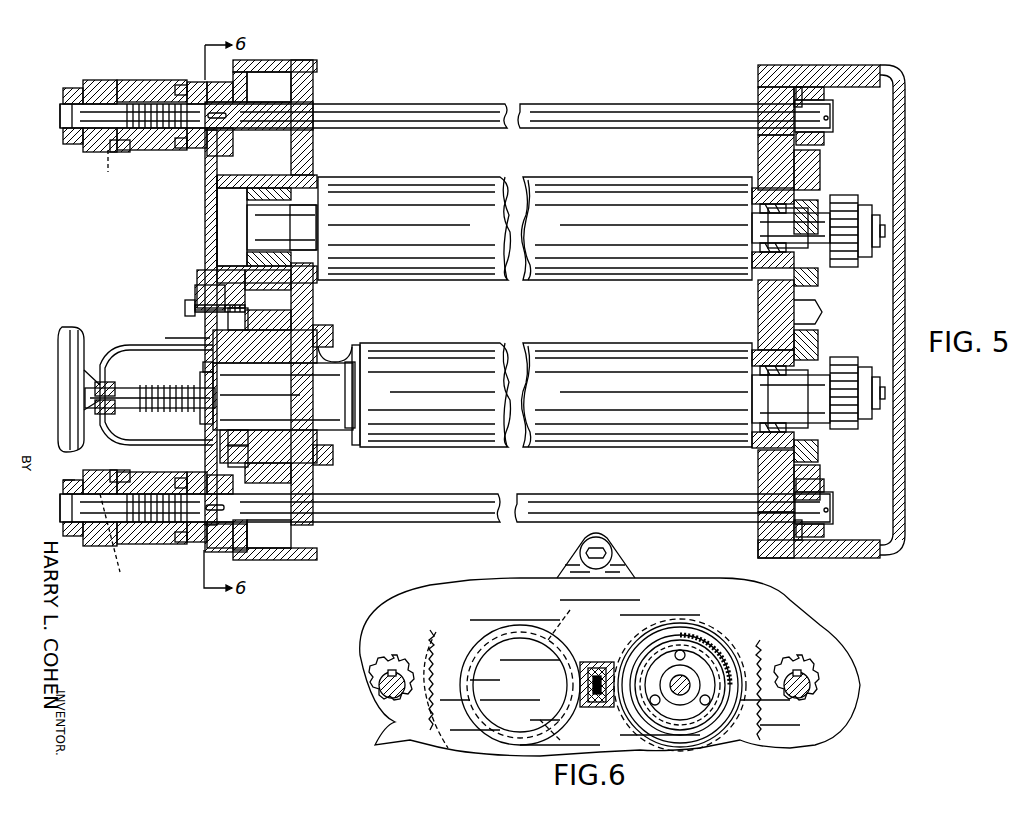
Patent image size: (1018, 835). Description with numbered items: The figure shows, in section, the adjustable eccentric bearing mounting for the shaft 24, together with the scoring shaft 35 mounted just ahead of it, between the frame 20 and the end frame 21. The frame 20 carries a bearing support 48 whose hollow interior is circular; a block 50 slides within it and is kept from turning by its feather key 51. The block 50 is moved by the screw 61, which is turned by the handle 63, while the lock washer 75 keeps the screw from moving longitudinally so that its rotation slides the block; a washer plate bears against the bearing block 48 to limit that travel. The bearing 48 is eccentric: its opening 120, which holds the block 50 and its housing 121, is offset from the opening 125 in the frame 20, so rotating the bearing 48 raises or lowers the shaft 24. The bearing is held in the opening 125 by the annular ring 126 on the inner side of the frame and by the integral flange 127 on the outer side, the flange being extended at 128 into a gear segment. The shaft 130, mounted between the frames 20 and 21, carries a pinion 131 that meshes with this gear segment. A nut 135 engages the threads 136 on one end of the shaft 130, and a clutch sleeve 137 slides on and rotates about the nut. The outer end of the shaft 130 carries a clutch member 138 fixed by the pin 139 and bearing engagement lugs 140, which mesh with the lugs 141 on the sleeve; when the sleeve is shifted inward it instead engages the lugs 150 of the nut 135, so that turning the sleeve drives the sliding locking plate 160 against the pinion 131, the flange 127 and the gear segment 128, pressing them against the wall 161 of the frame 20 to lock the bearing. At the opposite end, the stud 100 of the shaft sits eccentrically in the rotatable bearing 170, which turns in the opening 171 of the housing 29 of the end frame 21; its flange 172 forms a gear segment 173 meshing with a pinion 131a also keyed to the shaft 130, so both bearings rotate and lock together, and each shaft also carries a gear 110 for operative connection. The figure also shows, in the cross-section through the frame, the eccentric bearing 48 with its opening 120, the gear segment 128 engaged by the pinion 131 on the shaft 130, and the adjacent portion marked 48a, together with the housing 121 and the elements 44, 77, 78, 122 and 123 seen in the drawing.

In FIG. 5, the frame 20 is at (252, 300).
In FIG. 6, the frame 20 is at (748, 605).
In FIG. 5, the end frame 21 is at (884, 560).
In FIG. 5, the shaft 24 is at (450, 343).
In FIG. 5, the housing 29 is at (758, 150).
In FIG. 5, the scoring shaft 35 is at (412, 177).
In FIG. 5, the roller end plate 44 is at (360, 343).
In FIG. 5, the bearing support 48 is at (343, 338).
In FIG. 6, the bearing support 48 is at (610, 660).
In FIG. 5, the bracket opening 48a is at (205, 218).
In FIG. 6, the bracket opening 48a is at (512, 728).
In FIG. 5, the block 50 is at (352, 428).
In FIG. 6, the block 50 is at (710, 655).
In FIG. 5, the feather key 51 is at (310, 378).
In FIG. 5, the screw 61 is at (163, 384).
In FIG. 6, the screw 61 is at (692, 684).
In FIG. 5, the handle 63 is at (75, 338).
In FIG. 5, the lock washer 75 is at (128, 405).
In FIG. 5, the collar 77 is at (205, 365).
In FIG. 6, the collar 77 is at (705, 660).
In FIG. 5, the thrust plate 78 is at (200, 378).
In FIG. 6, the thrust plate 78 is at (680, 640).
In FIG. 5, the stud 100 is at (791, 318).
In FIG. 5, the gear 110 is at (858, 180).
In FIG. 5, the opening 120 is at (345, 352).
In FIG. 6, the opening 120 is at (710, 712).
In FIG. 5, the housing 121 is at (195, 288).
In FIG. 6, the housing 121 is at (580, 676).
In FIG. 5, the bearing block 122 is at (197, 272).
In FIG. 5, the bolt 123 is at (185, 306).
In FIG. 6, the bolt 123 is at (590, 688).
In FIG. 5, the opening 125 is at (280, 330).
In FIG. 6, the opening 125 is at (569, 669).
In FIG. 5, the annular ring 126 is at (325, 330).
In FIG. 5, the flange 127 is at (200, 335).
In FIG. 6, the flange 127 is at (490, 612).
In FIG. 5, the gear segment 128 is at (257, 454).
In FIG. 6, the gear segment 128 is at (430, 640).
In FIG. 5, the shaft 130 is at (432, 96).
In FIG. 6, the shaft 130 is at (380, 685).
In FIG. 5, the pinion 131 is at (213, 85).
In FIG. 6, the pinion 131 is at (372, 668).
In FIG. 5, the pinion 131a is at (803, 90).
In FIG. 5, the nut 135 is at (140, 80).
In FIG. 5, the threads 136 is at (140, 104).
In FIG. 5, the clutch sleeve 137 is at (125, 150).
In FIG. 5, the clutch member 138 is at (80, 90).
In FIG. 5, the pin 139 is at (70, 478).
In FIG. 5, the engagement lugs 140 is at (105, 82).
In FIG. 5, the engagement lugs 141 is at (122, 369).
In FIG. 5, the engagement lugs 150 is at (180, 85).
In FIG. 5, the sliding locking plate 160 is at (190, 82).
In FIG. 5, the wall 161 is at (269, 310).
In FIG. 5, the rotatable bearing 170 is at (818, 280).
In FIG. 5, the opening 171 is at (796, 192).
In FIG. 5, the flange 172 is at (822, 312).
In FIG. 5, the gear segment 173 is at (800, 160).